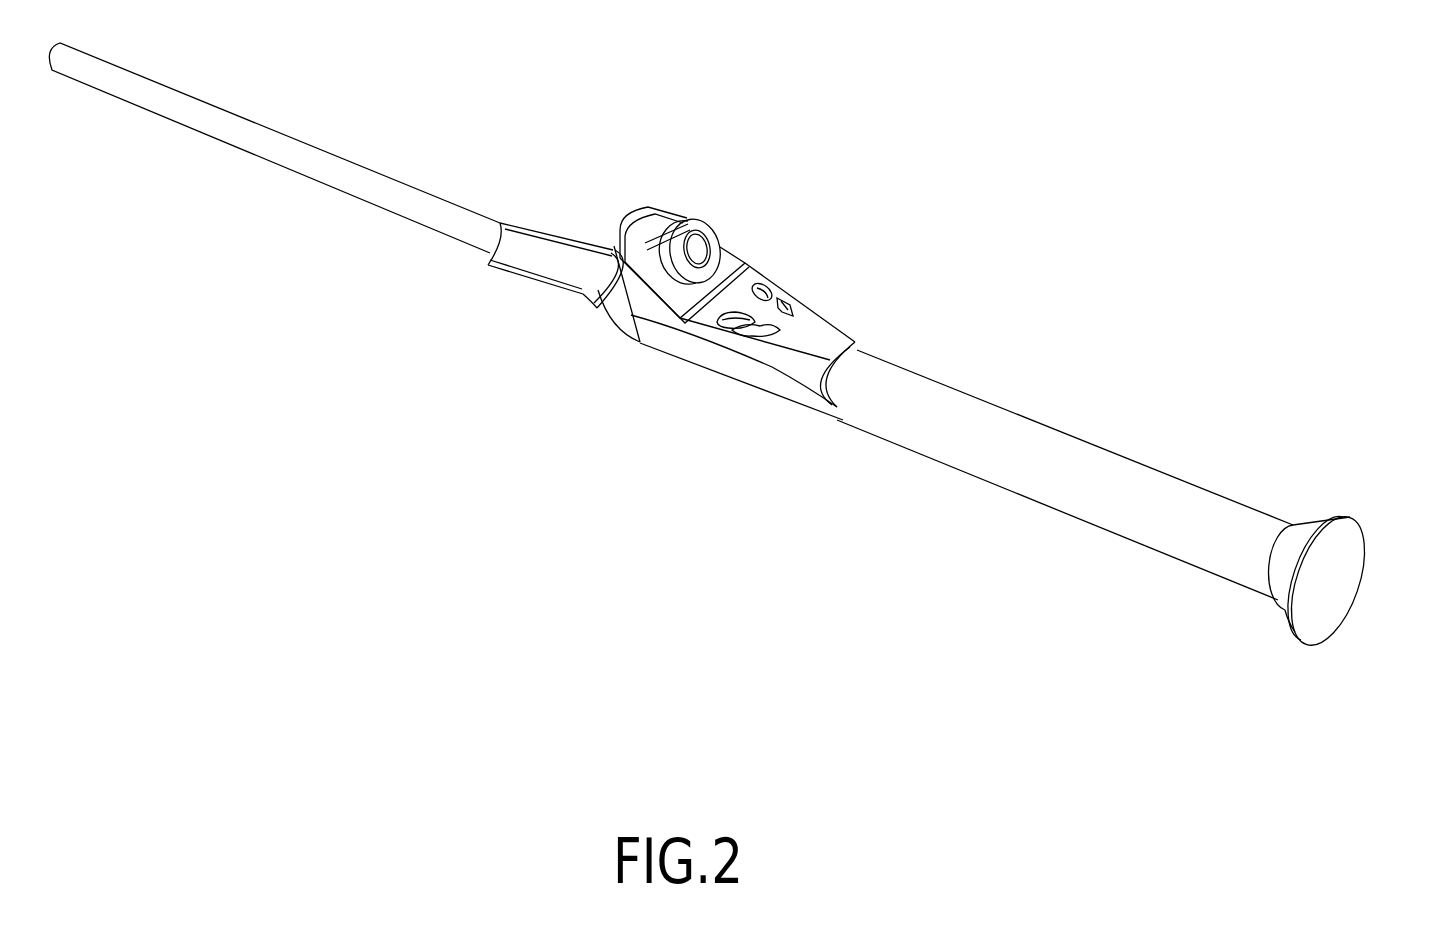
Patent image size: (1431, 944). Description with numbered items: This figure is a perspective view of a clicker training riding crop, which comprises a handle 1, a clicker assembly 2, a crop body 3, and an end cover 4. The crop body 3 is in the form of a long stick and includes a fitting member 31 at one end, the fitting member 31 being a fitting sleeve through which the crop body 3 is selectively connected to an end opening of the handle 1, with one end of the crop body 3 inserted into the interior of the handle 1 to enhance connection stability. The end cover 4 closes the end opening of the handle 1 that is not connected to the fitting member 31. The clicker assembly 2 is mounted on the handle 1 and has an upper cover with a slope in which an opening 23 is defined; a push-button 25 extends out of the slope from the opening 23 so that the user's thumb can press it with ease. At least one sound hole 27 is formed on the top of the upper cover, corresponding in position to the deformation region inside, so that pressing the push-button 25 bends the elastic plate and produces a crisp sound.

The handle 1 is at (1083, 430).
The clicker assembly 2 is at (748, 258).
The crop body 3 is at (262, 175).
The end cover 4 is at (1356, 512).
The opening 23 is at (662, 232).
The push-button 25 is at (690, 224).
The sound hole 27 is at (795, 300).
The fitting member 31 is at (552, 253).